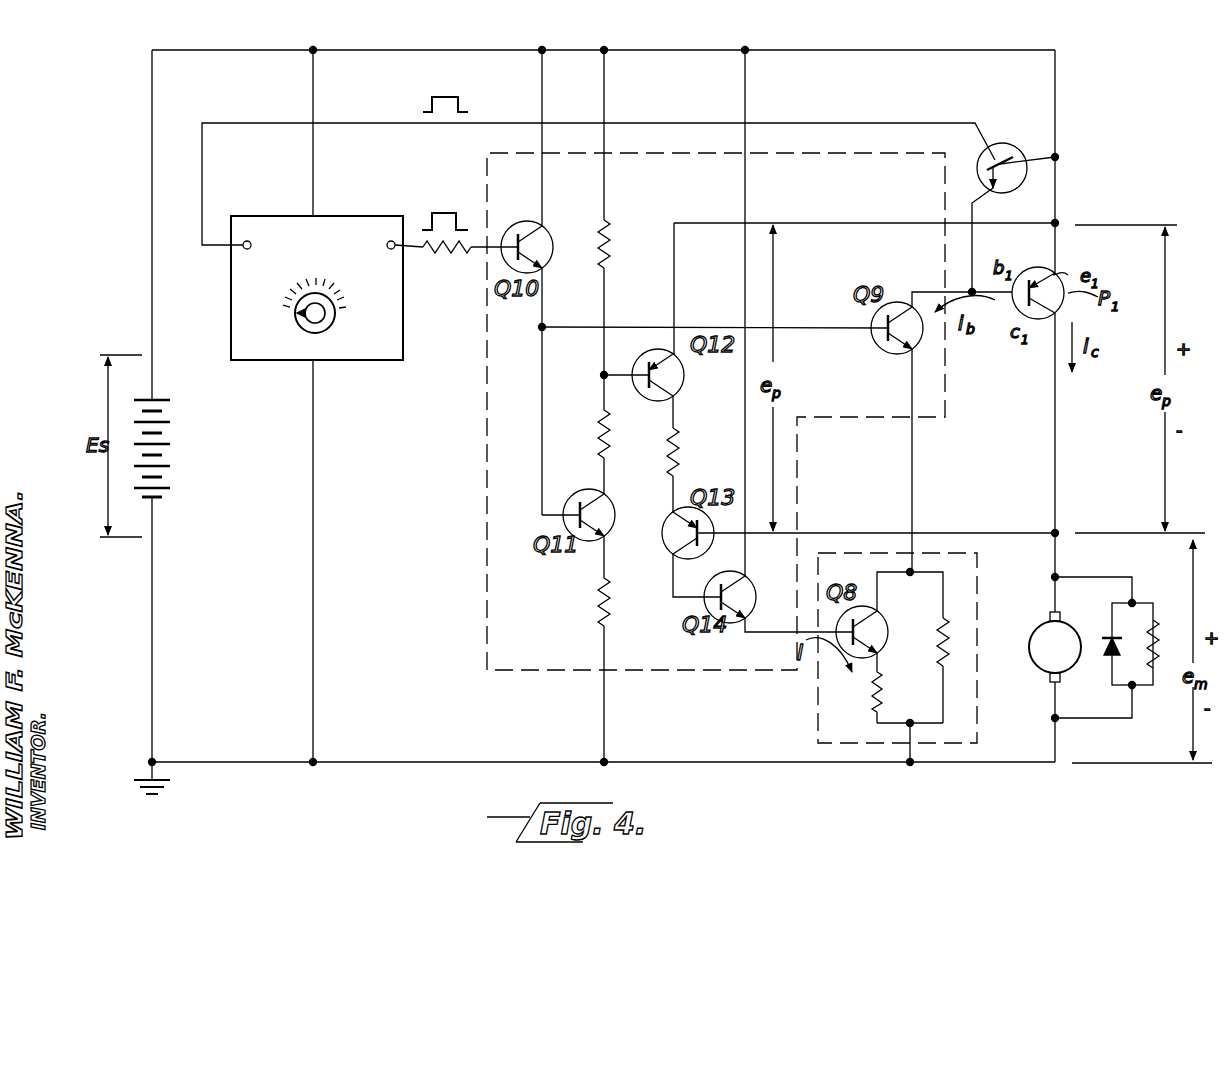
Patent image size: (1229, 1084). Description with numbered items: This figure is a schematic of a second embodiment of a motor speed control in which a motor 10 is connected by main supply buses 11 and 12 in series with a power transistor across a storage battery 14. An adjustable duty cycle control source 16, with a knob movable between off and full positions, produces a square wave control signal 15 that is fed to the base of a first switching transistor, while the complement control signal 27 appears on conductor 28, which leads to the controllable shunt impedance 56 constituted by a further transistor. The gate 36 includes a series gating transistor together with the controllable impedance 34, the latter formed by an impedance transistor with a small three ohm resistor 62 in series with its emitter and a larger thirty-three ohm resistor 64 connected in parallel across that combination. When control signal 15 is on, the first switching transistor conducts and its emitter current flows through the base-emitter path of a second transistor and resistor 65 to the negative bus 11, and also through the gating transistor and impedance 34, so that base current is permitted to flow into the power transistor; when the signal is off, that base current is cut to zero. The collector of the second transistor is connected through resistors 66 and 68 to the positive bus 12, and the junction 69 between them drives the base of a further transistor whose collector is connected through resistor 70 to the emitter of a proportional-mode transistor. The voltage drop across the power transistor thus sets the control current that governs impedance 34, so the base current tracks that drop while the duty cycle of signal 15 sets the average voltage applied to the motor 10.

The motor 10 is at (1038, 622).
The main supply bus 11 is at (378, 762).
The main supply bus 12 is at (405, 50).
The storage battery 14 is at (172, 441).
The control signal 15 is at (432, 210).
The adjustable duty cycle control source 16 is at (360, 366).
The complement control signal 27 is at (456, 96).
The conductor 28 is at (262, 123).
The controllable impedance 34 is at (815, 712).
The gate 36 is at (484, 548).
The controllable shunt impedance 56 is at (1032, 134).
The resistor 62 is at (878, 683).
The resistor 64 is at (942, 628).
The resistor 65 is at (602, 598).
The resistor 66 is at (606, 226).
The resistor 68 is at (600, 438).
The junction 69 is at (604, 375).
The resistor 70 is at (677, 447).